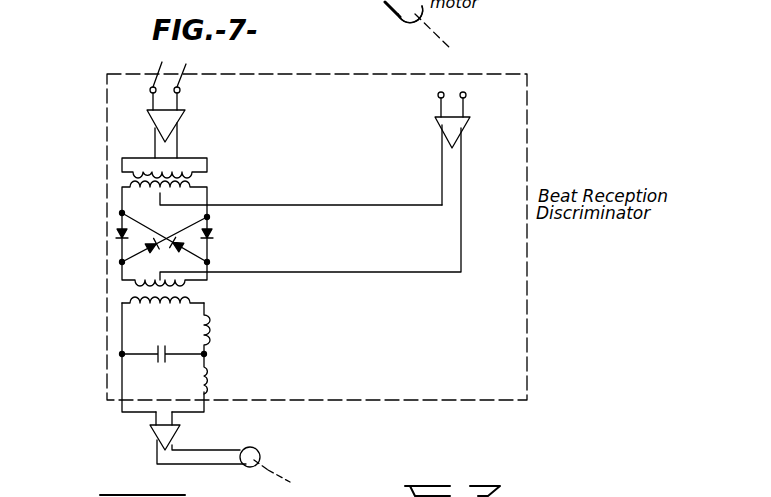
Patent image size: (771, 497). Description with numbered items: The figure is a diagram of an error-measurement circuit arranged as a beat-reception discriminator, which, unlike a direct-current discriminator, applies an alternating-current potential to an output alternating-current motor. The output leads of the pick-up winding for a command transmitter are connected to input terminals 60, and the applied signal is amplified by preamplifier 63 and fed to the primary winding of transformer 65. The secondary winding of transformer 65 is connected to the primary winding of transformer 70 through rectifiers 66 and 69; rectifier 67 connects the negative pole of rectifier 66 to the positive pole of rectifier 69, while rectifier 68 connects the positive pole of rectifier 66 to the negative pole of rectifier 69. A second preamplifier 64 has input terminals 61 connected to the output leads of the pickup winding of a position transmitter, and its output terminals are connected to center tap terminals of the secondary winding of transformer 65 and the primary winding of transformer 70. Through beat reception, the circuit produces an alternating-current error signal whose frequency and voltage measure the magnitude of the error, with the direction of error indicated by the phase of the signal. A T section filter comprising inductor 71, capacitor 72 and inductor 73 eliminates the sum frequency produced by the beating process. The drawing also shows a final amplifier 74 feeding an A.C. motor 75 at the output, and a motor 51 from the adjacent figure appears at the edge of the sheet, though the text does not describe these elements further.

The motor 51 is at (406, 26).
The input terminals 60 is at (168, 82).
The input terminals 61 is at (462, 90).
The preamplifier 63 is at (185, 126).
The preamplifier 64 is at (470, 124).
The transformer 65 is at (200, 181).
The rectifier 66 is at (116, 236).
The rectifier 67 is at (146, 250).
The rectifier 68 is at (183, 246).
The rectifier 69 is at (207, 233).
The transformer 70 is at (202, 291).
The inductor 71 is at (212, 327).
The capacitor 72 is at (160, 350).
The inductor 73 is at (212, 373).
The amplifier 74 is at (180, 432).
The A.C. motor 75 is at (247, 467).